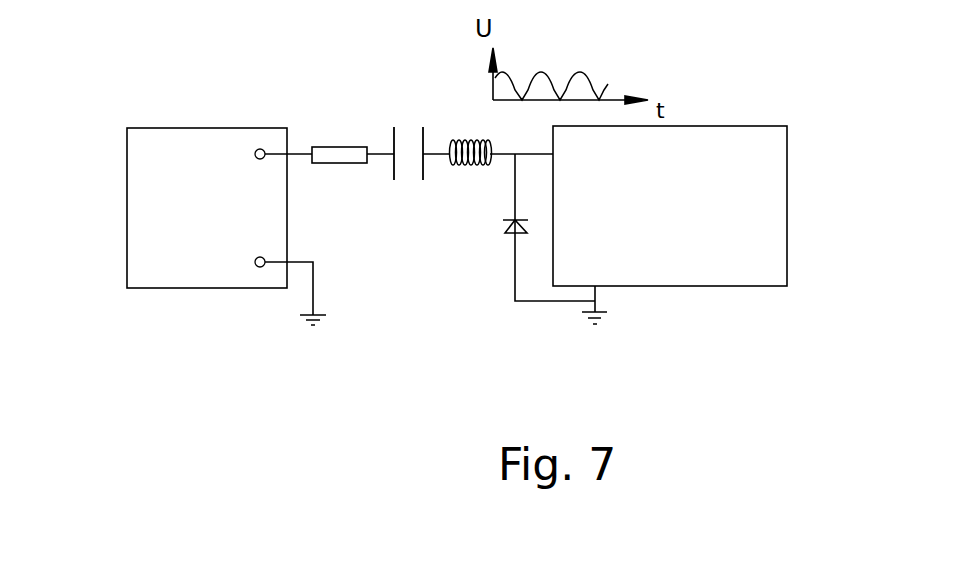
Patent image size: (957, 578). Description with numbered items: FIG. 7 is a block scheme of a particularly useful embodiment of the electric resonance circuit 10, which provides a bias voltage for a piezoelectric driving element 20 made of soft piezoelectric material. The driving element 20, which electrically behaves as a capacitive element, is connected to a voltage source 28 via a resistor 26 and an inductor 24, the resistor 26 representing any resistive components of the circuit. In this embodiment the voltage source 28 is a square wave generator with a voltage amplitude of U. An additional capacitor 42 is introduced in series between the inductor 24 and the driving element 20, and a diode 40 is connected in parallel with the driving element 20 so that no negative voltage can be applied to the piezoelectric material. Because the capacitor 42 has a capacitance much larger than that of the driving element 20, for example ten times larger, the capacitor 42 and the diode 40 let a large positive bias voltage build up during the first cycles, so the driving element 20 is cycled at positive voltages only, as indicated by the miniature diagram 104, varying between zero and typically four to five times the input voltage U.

The electric resonance circuit 10 is at (302, 383).
The piezoelectric driving element 20 is at (755, 282).
The inductor 24 is at (480, 140).
The resistor 26 is at (340, 147).
The voltage source 28 is at (135, 228).
The diode 40 is at (510, 233).
The capacitor 42 is at (393, 130).
The miniature diagram 104 is at (580, 72).